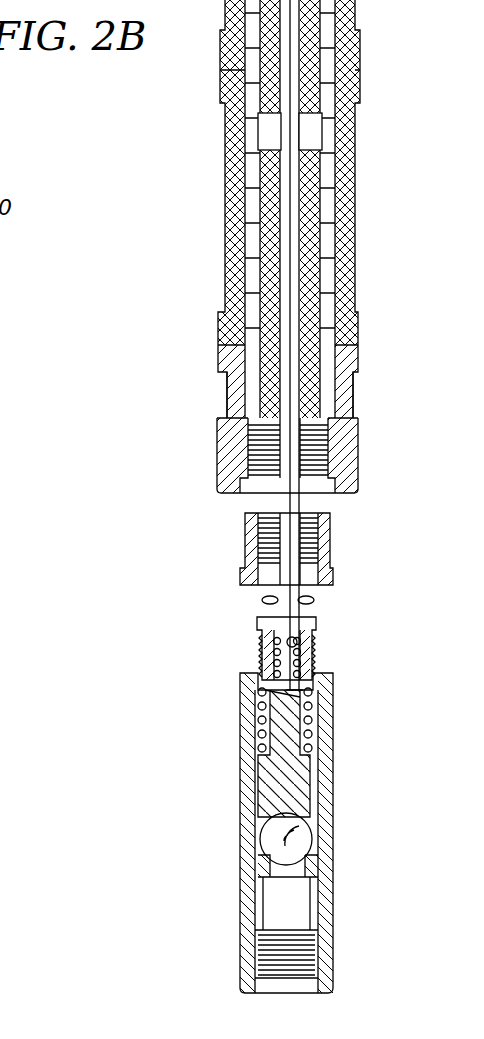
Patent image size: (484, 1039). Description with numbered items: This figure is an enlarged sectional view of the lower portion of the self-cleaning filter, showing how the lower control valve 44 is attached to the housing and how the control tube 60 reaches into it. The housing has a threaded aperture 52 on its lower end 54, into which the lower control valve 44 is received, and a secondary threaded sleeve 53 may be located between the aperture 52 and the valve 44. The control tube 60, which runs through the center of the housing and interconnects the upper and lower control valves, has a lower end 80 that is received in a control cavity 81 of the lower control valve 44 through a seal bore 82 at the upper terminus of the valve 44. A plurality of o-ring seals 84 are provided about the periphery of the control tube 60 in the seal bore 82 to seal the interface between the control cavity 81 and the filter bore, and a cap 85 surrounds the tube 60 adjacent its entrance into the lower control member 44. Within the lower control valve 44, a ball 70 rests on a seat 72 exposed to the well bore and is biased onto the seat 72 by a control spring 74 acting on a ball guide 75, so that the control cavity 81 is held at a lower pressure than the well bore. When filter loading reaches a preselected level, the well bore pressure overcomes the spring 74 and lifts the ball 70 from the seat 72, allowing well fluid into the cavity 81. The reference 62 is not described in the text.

The control tube 60 is at (287, 138).
The tubular housing 62 is at (352, 202).
The lower end 54 is at (345, 400).
The threaded aperture 52 is at (318, 462).
The secondary threaded sleeve 53 is at (322, 552).
The cap 85 is at (315, 604).
The seal bore 82 is at (300, 640).
The o-ring seals 84 is at (305, 662).
The lower end of control tube 80 is at (318, 672).
The control cavity 81 is at (300, 695).
The control spring 74 is at (312, 731).
The lower control valve 44 is at (350, 762).
The ball guide 75 is at (300, 800).
The ball 70 is at (303, 838).
The seat 72 is at (318, 858).